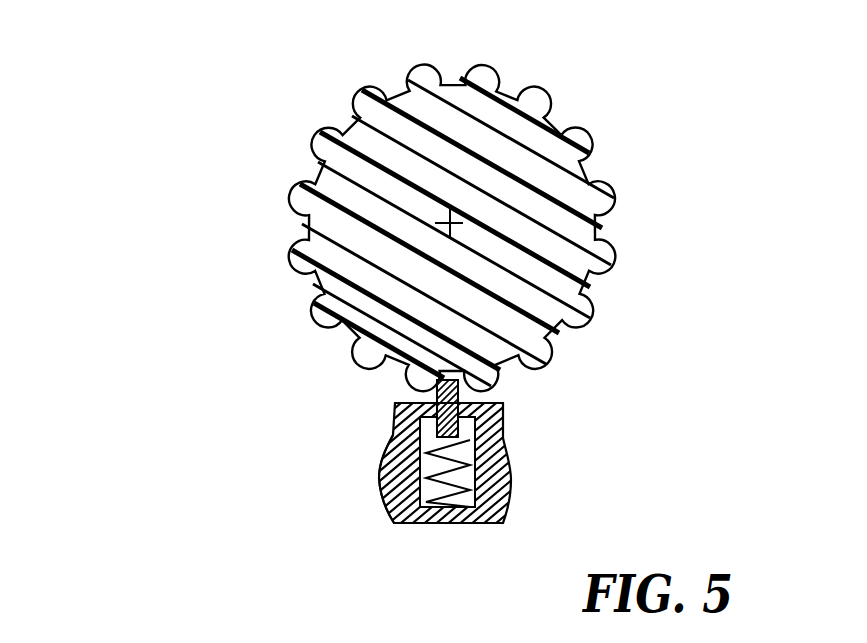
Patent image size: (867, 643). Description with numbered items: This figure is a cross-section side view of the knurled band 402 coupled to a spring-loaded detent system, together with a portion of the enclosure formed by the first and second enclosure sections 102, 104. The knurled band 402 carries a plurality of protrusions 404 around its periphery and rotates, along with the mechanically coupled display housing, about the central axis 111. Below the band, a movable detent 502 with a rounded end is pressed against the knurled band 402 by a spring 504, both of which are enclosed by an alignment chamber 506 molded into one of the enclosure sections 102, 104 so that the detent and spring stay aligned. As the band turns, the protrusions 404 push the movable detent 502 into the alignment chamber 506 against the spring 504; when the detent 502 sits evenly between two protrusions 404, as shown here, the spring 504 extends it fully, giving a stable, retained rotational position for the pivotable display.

The knurled band 402 is at (508, 228).
The plurality of protrusions 404 is at (612, 258).
The central axis 111 is at (449, 228).
The movable detent 502 is at (447, 436).
The spring 504 is at (463, 477).
The alignment chamber 506 is at (423, 482).
The first enclosure section 102 is at (391, 463).
The second enclosure section 104 is at (436, 528).